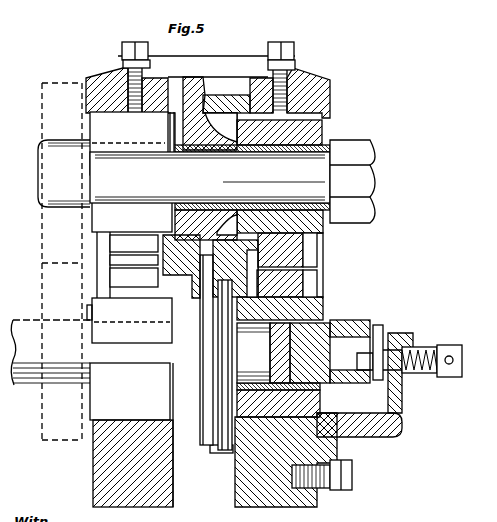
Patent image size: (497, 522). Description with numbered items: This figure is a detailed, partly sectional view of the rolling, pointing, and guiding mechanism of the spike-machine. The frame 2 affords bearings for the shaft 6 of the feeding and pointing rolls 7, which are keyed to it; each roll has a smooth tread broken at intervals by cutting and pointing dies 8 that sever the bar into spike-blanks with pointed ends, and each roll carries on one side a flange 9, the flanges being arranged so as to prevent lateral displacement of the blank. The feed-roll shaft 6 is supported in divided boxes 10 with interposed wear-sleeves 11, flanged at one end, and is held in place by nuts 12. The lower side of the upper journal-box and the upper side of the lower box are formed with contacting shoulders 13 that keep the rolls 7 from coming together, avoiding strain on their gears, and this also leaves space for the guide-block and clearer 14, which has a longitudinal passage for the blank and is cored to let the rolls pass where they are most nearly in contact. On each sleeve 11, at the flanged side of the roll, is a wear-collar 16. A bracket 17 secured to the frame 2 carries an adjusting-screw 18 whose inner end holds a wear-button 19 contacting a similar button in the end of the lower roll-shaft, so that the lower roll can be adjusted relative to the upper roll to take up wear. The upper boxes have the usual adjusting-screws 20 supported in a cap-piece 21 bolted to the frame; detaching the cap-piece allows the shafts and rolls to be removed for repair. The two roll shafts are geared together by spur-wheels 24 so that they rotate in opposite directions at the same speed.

The frame 2 is at (222, 439).
The shaft 6 is at (210, 267).
The feeding and pointing rolls 7 is at (190, 344).
The cutting and pointing dies 8 is at (218, 420).
The flange 9 is at (192, 80).
The divided boxes 10 is at (337, 411).
The wear-sleeves 11 is at (330, 150).
The nuts 12 is at (370, 330).
The contacting shoulders 13 is at (333, 272).
The guide-block and clearer 14 is at (216, 253).
The wear-collar 16 is at (175, 118).
The bracket 17 is at (385, 437).
The adjusting-screw 18 is at (432, 350).
The wear-button 19 is at (402, 395).
The adjusting-screws 20 is at (121, 58).
The cap-piece 21 is at (206, 66).
The spur-wheels 24 is at (62, 261).